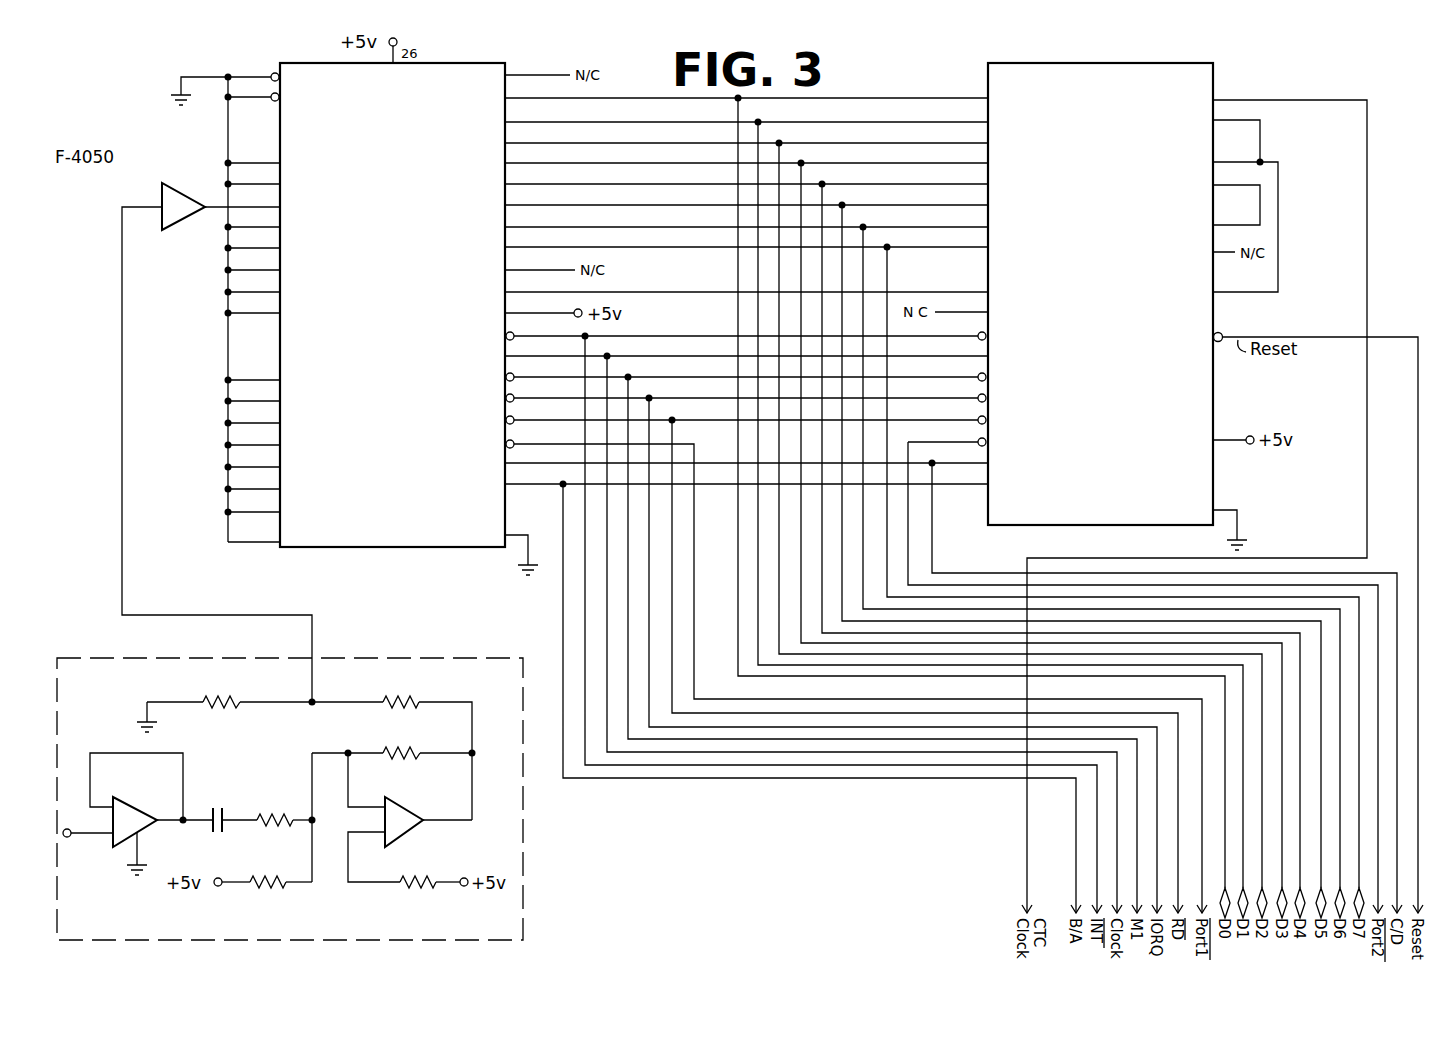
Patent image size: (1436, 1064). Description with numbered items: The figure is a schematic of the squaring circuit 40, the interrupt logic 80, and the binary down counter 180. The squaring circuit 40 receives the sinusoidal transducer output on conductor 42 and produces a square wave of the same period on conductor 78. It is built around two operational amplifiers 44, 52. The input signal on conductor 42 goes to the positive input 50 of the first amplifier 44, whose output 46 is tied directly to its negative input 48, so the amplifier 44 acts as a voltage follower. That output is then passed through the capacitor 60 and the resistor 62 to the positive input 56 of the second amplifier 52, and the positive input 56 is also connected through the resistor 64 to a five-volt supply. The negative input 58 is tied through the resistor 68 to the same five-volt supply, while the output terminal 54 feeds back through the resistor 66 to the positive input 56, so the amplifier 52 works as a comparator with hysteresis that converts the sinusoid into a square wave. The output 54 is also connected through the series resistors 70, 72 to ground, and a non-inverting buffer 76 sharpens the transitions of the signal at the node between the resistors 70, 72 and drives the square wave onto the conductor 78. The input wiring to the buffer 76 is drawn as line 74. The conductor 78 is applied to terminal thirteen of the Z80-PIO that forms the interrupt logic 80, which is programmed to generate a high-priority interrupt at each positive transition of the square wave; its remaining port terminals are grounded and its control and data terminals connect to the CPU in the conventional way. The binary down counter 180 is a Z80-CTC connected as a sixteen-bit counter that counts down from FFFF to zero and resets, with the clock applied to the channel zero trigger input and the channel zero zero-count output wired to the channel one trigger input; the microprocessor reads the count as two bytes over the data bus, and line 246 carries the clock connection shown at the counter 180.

The squaring circuit 40 is at (405, 658).
The conductor 42 is at (70, 840).
The operational amplifier 44 is at (146, 808).
The output 46 is at (155, 822).
The negative input 48 is at (114, 807).
The positive input 50 is at (110, 833).
The operational amplifier 52 is at (415, 808).
The output terminal 54 is at (424, 822).
The positive input 56 is at (385, 808).
The negative input 58 is at (384, 833).
The capacitor 60 is at (221, 808).
The resistor 62 is at (272, 809).
The resistor 64 is at (266, 885).
The resistor 66 is at (405, 750).
The resistor 68 is at (418, 884).
The resistor 70 is at (384, 698).
The resistor 72 is at (236, 698).
The input line to buffer 74 is at (122, 220).
The buffer 76 is at (182, 193).
The conductor 78 is at (214, 212).
The interrupt logic 80 is at (480, 63).
The binary down counter 180 is at (988, 63).
The CTC clock line 246 is at (1367, 398).